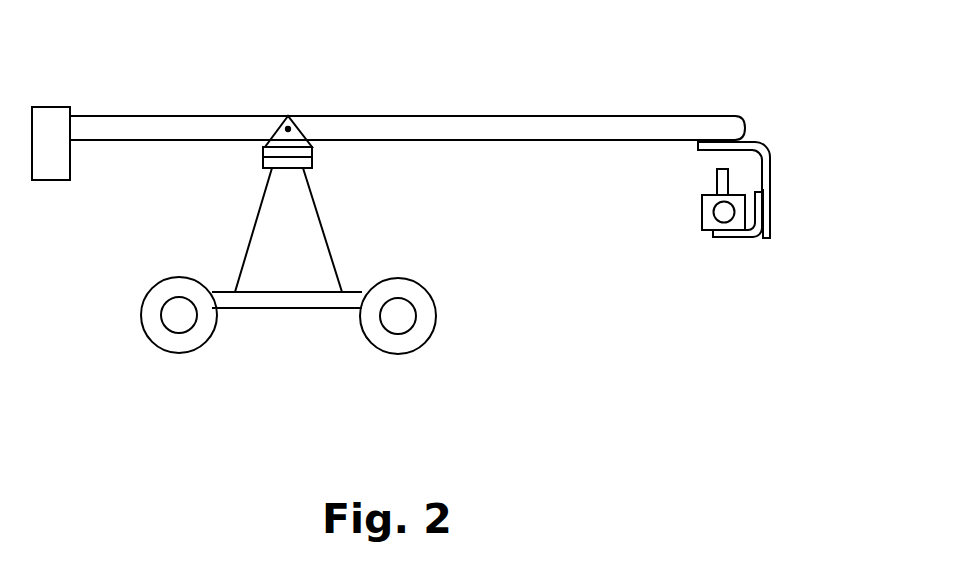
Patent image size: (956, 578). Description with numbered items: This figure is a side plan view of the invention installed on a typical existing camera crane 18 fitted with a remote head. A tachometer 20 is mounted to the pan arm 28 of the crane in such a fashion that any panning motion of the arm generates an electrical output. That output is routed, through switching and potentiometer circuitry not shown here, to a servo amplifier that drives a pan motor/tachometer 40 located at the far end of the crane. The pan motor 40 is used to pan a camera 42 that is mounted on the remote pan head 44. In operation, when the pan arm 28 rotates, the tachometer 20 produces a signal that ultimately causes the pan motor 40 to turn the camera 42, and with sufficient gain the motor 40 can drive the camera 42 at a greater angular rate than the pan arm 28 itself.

The crane 18 is at (535, 114).
The tachometer 20 is at (312, 158).
The pan arm 28 is at (265, 150).
The pan motor/tachometer 40 is at (724, 145).
The camera 42 is at (705, 228).
The remote pan head 44 is at (770, 167).